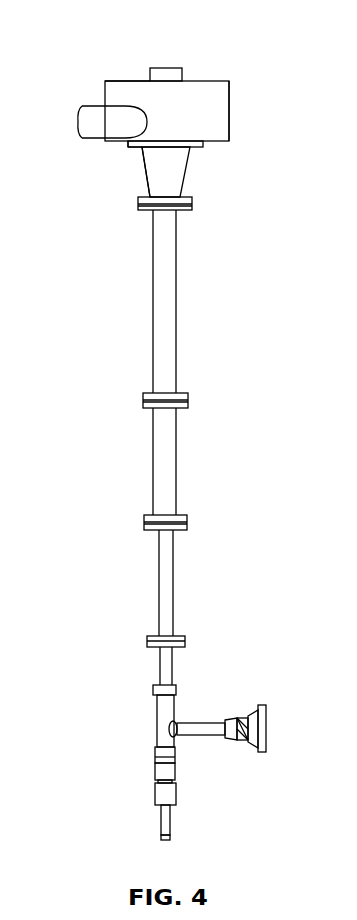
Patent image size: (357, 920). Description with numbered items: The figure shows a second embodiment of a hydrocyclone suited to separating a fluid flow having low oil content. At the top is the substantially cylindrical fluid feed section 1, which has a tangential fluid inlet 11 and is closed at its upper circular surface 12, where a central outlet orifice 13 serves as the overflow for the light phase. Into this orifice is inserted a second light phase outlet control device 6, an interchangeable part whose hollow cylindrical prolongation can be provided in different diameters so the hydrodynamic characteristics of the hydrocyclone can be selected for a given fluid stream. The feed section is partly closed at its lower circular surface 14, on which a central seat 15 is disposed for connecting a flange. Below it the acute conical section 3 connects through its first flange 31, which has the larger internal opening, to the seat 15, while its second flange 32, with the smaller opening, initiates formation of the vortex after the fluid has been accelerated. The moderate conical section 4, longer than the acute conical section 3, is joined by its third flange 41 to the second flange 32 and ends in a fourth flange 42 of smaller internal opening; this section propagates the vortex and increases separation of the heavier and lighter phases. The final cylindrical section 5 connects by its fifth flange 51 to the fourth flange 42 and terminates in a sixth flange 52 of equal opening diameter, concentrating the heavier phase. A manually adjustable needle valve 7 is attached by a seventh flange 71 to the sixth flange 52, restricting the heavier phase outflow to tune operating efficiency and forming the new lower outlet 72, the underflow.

The fluid feed section 1 is at (218, 110).
The second light phase outlet control device 6 is at (219, 43).
The tangential fluid inlet 11 is at (80, 120).
The upper circular surface 12 is at (258, 87).
The outlet orifice 13 is at (86, 57).
The lower circular surface 14 is at (216, 154).
The seat 15 is at (82, 160).
The acute conical section 3 is at (165, 180).
The first flange 31 is at (86, 178).
The second flange 32 is at (172, 200).
The moderate conical section 4 is at (170, 298).
The third flange 41 is at (107, 326).
The fourth flange 42 is at (187, 397).
The final cylindrical section 5 is at (166, 582).
The fifth flange 51 is at (104, 544).
The sixth flange 52 is at (185, 640).
The needle valve 7 is at (163, 726).
The seventh flange 71 is at (100, 668).
The new lower outlet 72 is at (270, 728).